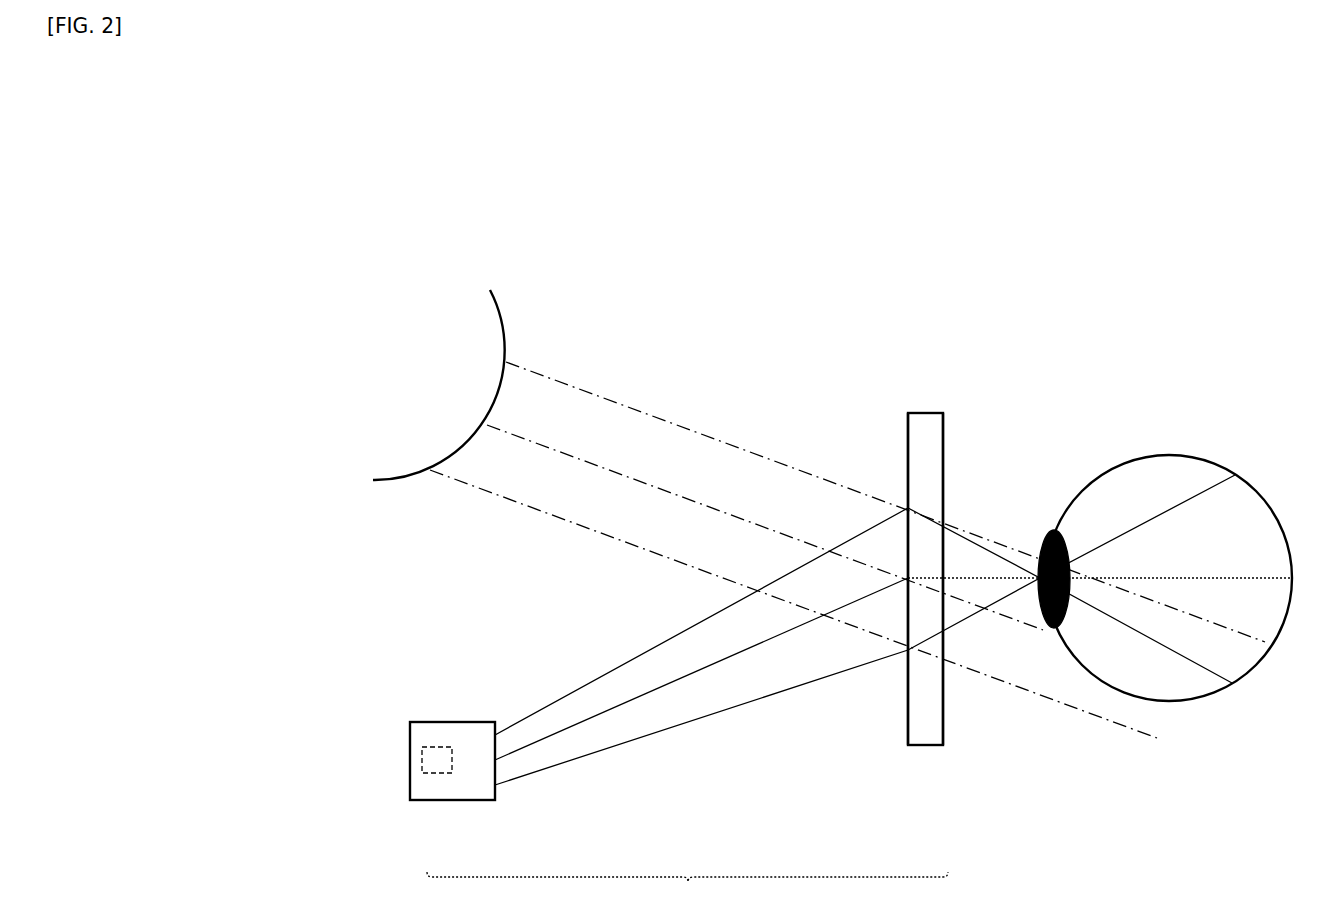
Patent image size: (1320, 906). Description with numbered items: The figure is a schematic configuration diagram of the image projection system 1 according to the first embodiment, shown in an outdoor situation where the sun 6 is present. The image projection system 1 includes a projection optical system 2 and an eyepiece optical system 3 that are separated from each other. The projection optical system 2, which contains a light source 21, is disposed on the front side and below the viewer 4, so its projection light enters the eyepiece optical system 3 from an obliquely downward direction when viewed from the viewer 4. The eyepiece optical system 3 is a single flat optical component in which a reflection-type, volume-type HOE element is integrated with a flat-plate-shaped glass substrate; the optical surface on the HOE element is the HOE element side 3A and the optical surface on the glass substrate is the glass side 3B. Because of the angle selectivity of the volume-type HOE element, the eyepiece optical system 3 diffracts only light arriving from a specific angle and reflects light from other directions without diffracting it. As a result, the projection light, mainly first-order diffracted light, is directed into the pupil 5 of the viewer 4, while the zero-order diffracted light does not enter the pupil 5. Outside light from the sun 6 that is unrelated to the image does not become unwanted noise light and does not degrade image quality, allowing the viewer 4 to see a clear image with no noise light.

The image projection system 1 is at (687, 889).
The projection optical system 2 is at (455, 802).
The light source 21 is at (409, 761).
The eyepiece optical system 3 is at (925, 748).
The HOE element side 3A is at (907, 431).
The glass side 3B is at (944, 431).
The viewer 4 is at (1162, 455).
The pupil 5 is at (1048, 527).
The sun 6 is at (500, 308).